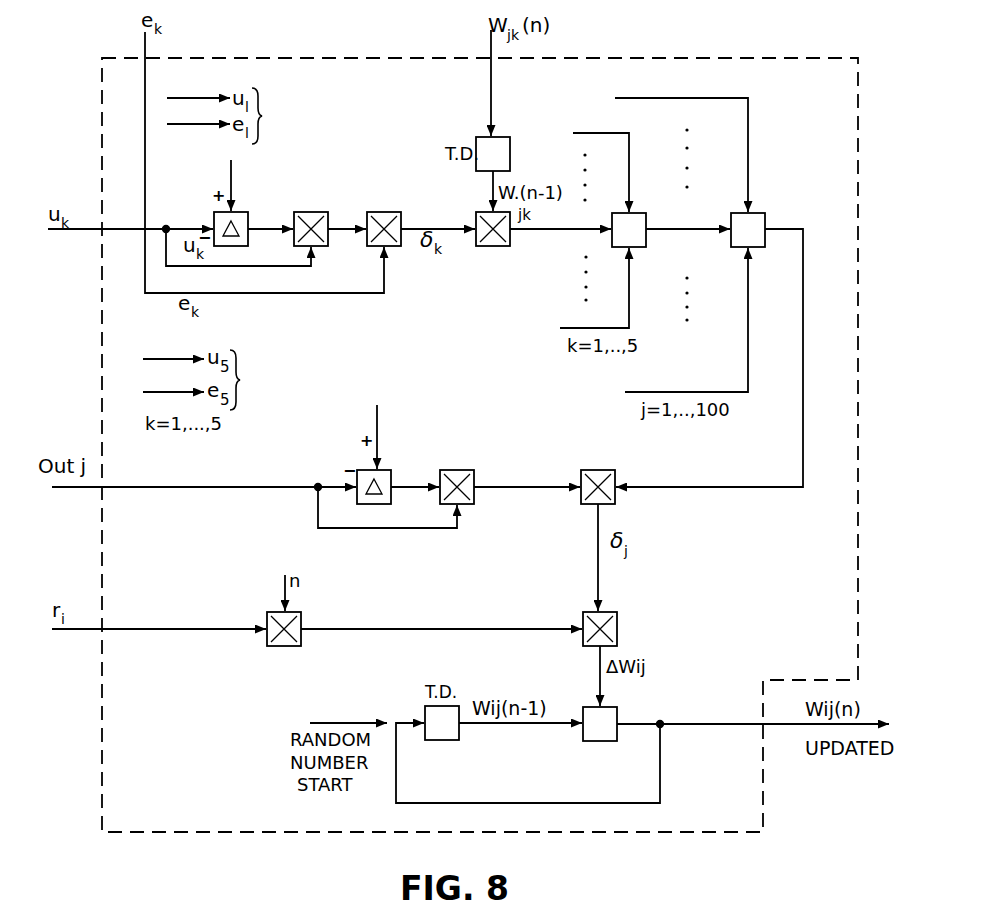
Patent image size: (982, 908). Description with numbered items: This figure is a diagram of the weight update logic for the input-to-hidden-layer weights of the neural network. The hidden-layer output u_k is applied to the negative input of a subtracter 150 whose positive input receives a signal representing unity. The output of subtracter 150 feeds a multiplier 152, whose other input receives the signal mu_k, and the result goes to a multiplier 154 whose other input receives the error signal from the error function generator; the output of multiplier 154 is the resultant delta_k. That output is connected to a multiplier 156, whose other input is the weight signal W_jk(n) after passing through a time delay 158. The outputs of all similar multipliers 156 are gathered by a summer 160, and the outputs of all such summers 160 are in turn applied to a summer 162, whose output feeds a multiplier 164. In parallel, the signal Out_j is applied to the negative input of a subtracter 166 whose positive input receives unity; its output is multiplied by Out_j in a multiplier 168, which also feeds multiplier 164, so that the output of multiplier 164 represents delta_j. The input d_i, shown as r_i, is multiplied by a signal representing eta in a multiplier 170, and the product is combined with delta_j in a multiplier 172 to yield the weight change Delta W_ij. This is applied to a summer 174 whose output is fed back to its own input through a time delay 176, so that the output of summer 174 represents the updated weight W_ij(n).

The subtracter 150 is at (248, 212).
The multiplier 152 is at (350, 194).
The multiplier 154 is at (423, 194).
The multiplier 156 is at (487, 246).
The time delay 158 is at (510, 153).
The summer 160 is at (665, 202).
The summer 162 is at (787, 202).
The multiplier 164 is at (615, 470).
The subtracter 166 is at (391, 470).
The multiplier 168 is at (474, 470).
The multiplier 170 is at (298, 646).
The multiplier 172 is at (617, 612).
The summer 174 is at (614, 741).
The time delay 176 is at (455, 740).